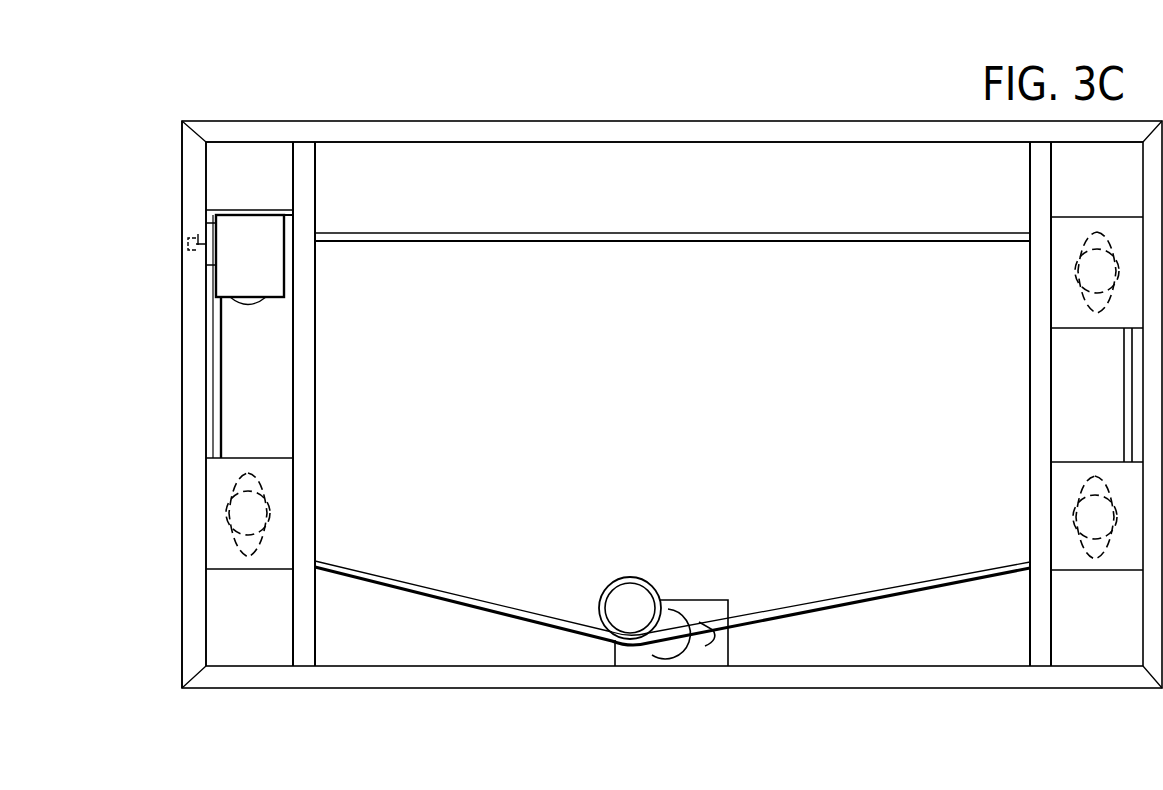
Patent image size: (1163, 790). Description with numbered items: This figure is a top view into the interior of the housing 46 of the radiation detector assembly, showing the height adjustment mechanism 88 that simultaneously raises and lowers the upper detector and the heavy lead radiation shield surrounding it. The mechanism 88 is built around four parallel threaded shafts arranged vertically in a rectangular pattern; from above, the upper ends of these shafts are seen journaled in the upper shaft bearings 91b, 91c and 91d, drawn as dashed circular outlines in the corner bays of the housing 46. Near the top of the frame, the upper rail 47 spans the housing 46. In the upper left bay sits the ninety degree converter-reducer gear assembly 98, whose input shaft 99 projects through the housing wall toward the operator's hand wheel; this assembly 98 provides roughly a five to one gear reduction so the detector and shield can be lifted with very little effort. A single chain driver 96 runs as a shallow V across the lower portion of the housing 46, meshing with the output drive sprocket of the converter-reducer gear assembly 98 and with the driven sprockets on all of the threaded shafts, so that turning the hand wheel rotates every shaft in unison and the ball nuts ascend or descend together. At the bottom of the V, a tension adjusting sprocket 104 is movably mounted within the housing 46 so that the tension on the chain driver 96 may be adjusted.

The housing 46 is at (208, 81).
The top rail 47 is at (655, 131).
The height adjustment mechanism 88 is at (178, 272).
The input shaft 99 is at (191, 228).
The converter-reducer gear assembly 98 is at (237, 228).
The upper shaft bearing 91b is at (270, 545).
The upper shaft bearing 91c is at (1086, 263).
The upper shaft bearing 91d is at (1086, 508).
The chain driver 96 is at (856, 598).
The tension adjusting sprocket 104 is at (628, 597).